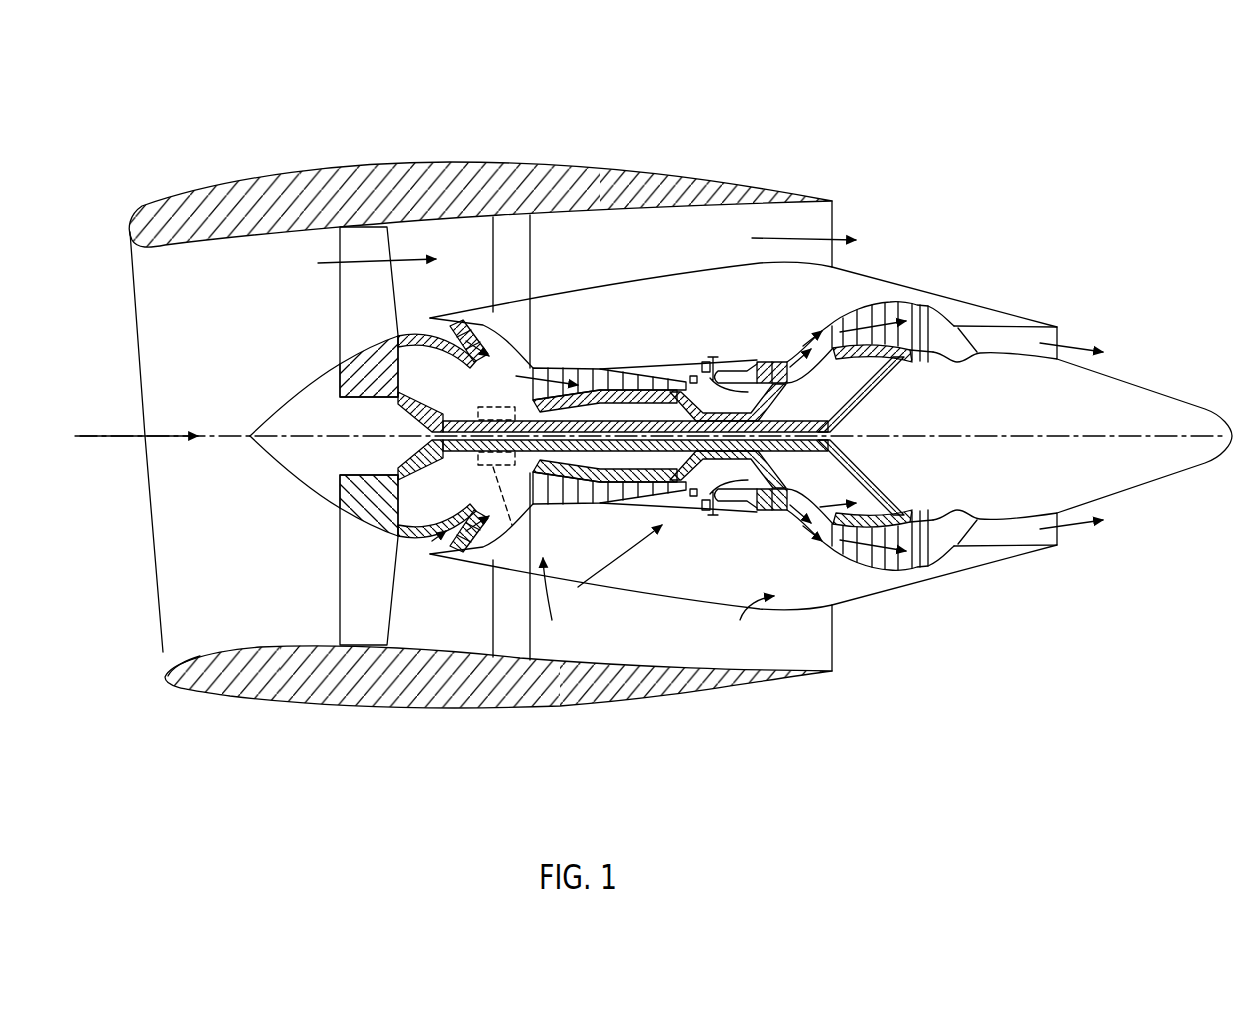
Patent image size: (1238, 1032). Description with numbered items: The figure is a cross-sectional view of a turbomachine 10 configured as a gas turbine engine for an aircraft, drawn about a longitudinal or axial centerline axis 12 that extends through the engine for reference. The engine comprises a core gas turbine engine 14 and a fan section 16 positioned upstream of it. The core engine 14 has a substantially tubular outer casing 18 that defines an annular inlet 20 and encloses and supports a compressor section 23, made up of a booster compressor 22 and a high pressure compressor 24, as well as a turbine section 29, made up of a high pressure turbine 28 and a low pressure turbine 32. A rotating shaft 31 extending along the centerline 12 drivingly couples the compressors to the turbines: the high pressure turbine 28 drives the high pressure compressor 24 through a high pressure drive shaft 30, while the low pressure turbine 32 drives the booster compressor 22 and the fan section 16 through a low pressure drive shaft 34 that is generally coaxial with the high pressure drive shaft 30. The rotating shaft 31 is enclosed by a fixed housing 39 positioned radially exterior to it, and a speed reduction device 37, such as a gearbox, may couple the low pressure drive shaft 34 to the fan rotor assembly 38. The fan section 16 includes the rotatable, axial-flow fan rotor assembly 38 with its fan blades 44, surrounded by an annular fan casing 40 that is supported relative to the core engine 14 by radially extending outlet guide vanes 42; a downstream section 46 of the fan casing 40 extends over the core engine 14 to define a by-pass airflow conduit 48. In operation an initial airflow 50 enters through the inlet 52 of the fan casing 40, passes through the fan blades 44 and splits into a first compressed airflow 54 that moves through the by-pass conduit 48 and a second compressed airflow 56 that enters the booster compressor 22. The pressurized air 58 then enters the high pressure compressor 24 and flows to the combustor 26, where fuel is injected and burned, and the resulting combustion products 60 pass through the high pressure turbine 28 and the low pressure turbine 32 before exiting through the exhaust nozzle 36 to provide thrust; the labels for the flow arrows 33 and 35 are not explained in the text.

The turbomachine 10 is at (972, 178).
The longitudinal or axial centerline axis 12 is at (1000, 436).
The core gas turbine engine 14 is at (657, 338).
The fan section 16 is at (333, 100).
The outer casing 18 is at (690, 602).
The annular inlet 20 is at (440, 545).
The booster compressor 22 is at (490, 512).
The compressor section 23 is at (553, 605).
The high pressure compressor 24 is at (572, 496).
The combustor 26 is at (727, 498).
The high pressure turbine 28 is at (870, 554).
The turbine section 29 is at (751, 623).
The high pressure drive shaft 30 is at (750, 407).
The rotating shaft 31 is at (635, 436).
The low pressure turbine 32 is at (907, 567).
The air flow 33 is at (609, 572).
The low pressure drive shaft 34 is at (499, 405).
The core air flowpath 35 is at (820, 513).
The exhaust nozzle 36 is at (1060, 335).
The speed reduction device 37 is at (501, 507).
The fan rotor assembly 38 is at (360, 390).
The fixed housing 39 is at (1008, 527).
The fan casing 40 is at (387, 706).
The outlet guide vanes 42 is at (530, 255).
The fan blades 44 is at (338, 587).
The downstream section of the fan casing 46 is at (622, 170).
The by-pass airflow conduit 48 is at (676, 256).
The initial airflow 50 is at (124, 436).
The inlet 52 is at (160, 658).
The first compressed airflow 54 is at (356, 263).
The second compressed airflow 56 is at (414, 330).
The pressurized air 58 is at (537, 378).
The combustion products 60 is at (768, 360).